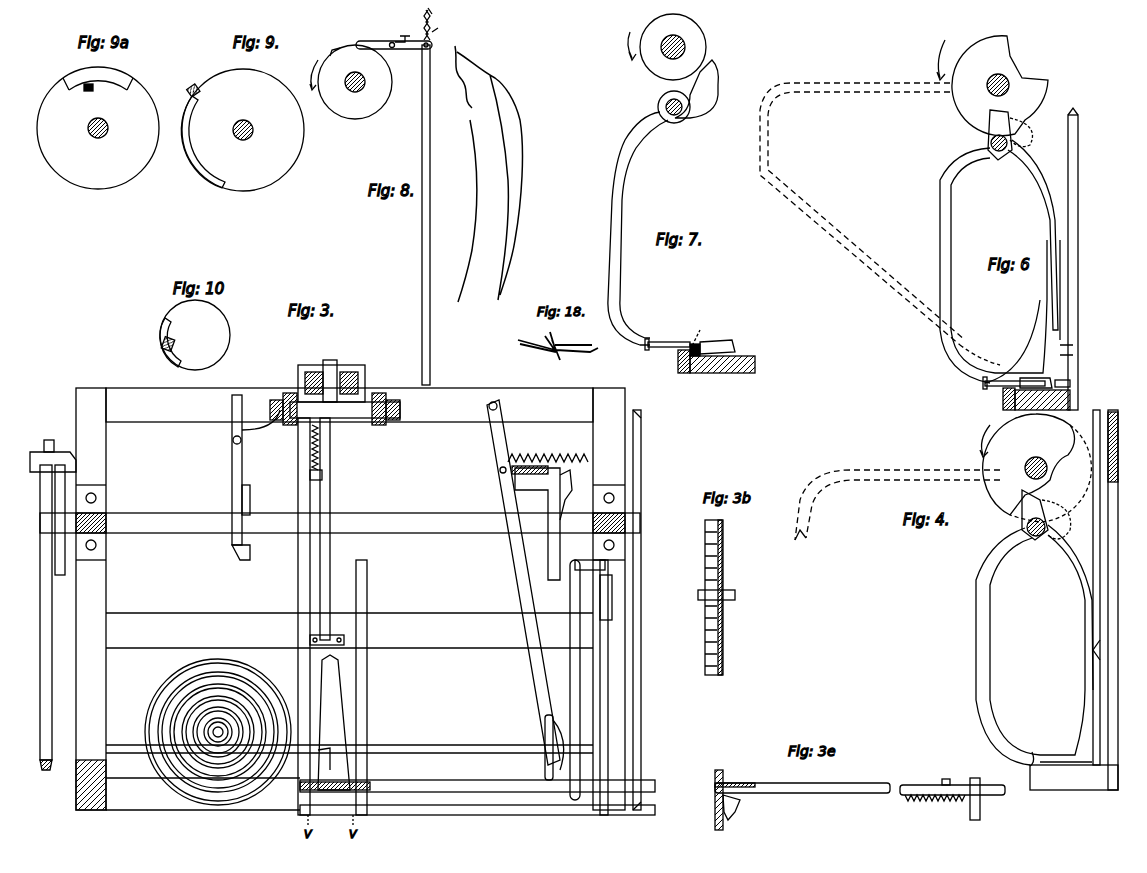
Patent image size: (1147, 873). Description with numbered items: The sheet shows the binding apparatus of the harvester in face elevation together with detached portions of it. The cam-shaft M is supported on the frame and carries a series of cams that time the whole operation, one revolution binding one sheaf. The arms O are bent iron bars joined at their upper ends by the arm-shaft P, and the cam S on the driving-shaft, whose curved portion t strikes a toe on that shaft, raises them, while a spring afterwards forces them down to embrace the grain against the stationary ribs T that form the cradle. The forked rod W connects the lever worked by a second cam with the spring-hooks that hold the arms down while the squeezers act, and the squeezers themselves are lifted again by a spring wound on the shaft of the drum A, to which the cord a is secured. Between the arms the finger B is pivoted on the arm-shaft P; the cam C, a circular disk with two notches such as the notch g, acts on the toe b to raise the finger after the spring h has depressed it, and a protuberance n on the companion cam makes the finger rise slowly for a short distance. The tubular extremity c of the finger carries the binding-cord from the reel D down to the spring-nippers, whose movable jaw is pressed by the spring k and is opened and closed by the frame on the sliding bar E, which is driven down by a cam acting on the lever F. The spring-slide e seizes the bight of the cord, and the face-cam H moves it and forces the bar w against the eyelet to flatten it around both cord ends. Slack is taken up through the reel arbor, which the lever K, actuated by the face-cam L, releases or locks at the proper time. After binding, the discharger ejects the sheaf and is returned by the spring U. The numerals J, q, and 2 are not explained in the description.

In FIG. 3, the drum A is at (53, 605).
In FIG. 3, the finger B is at (330, 712).
In FIG. 7, the finger B is at (638, 228).
In FIG. 6, the finger B is at (999, 265).
In FIG. 7, the cam C is at (667, 47).
In FIG. 6, the cam C is at (992, 86).
In FIG. 3, the reel D is at (384, 433).
In FIG. 8, the sliding bar E is at (428, 196).
In FIG. 8, the lever F is at (394, 38).
In FIG. 9A, the face-cam H is at (98, 80).
In FIG. 3, the cross bar J is at (345, 389).
In FIG. 3, the lever K is at (218, 732).
In FIG. 10, the face-cam L is at (170, 341).
In FIG. 3, the cam-shaft M is at (340, 523).
In FIG. 3B, the cam-shaft M is at (716, 597).
In FIG. 4, the arms O is at (1034, 645).
In FIG. 3, the arm-shaft P is at (526, 747).
In FIG. 4, the cam S is at (1035, 468).
In FIG. 3, the stationary ribs T is at (479, 607).
In FIG. 6, the stationary ribs T is at (1065, 259).
In FIG. 4, the stationary ribs T is at (1074, 600).
In FIG. 3, the spring U is at (548, 450).
In FIG. 3, the forked rod W is at (323, 616).
In FIG. 8, the cord a is at (351, 82).
In FIG. 7, the toe b is at (690, 91).
In FIG. 7, the tubular extremity c is at (667, 340).
In FIG. 6, the tubular extremity c is at (1014, 389).
In FIG. 3, the spring-slide e is at (599, 590).
In FIG. 7, the spring-slide e is at (716, 347).
In FIG. 6, the spring-slide e is at (1038, 377).
In FIG. 9, the notch g is at (203, 136).
In FIG. 6, the spring h is at (1035, 235).
In FIG. 3, the spring k is at (253, 477).
In FIG. 3E, the spring k is at (732, 800).
In FIG. 4, the protuberance n is at (1060, 750).
In FIG. 6, the link q is at (1010, 134).
In FIG. 4, the curved portion t is at (1038, 512).
In FIG. 3, the bar w is at (477, 797).
In FIG. 3E, the bar w is at (860, 799).
In FIG. 3, the spring 2 is at (542, 523).